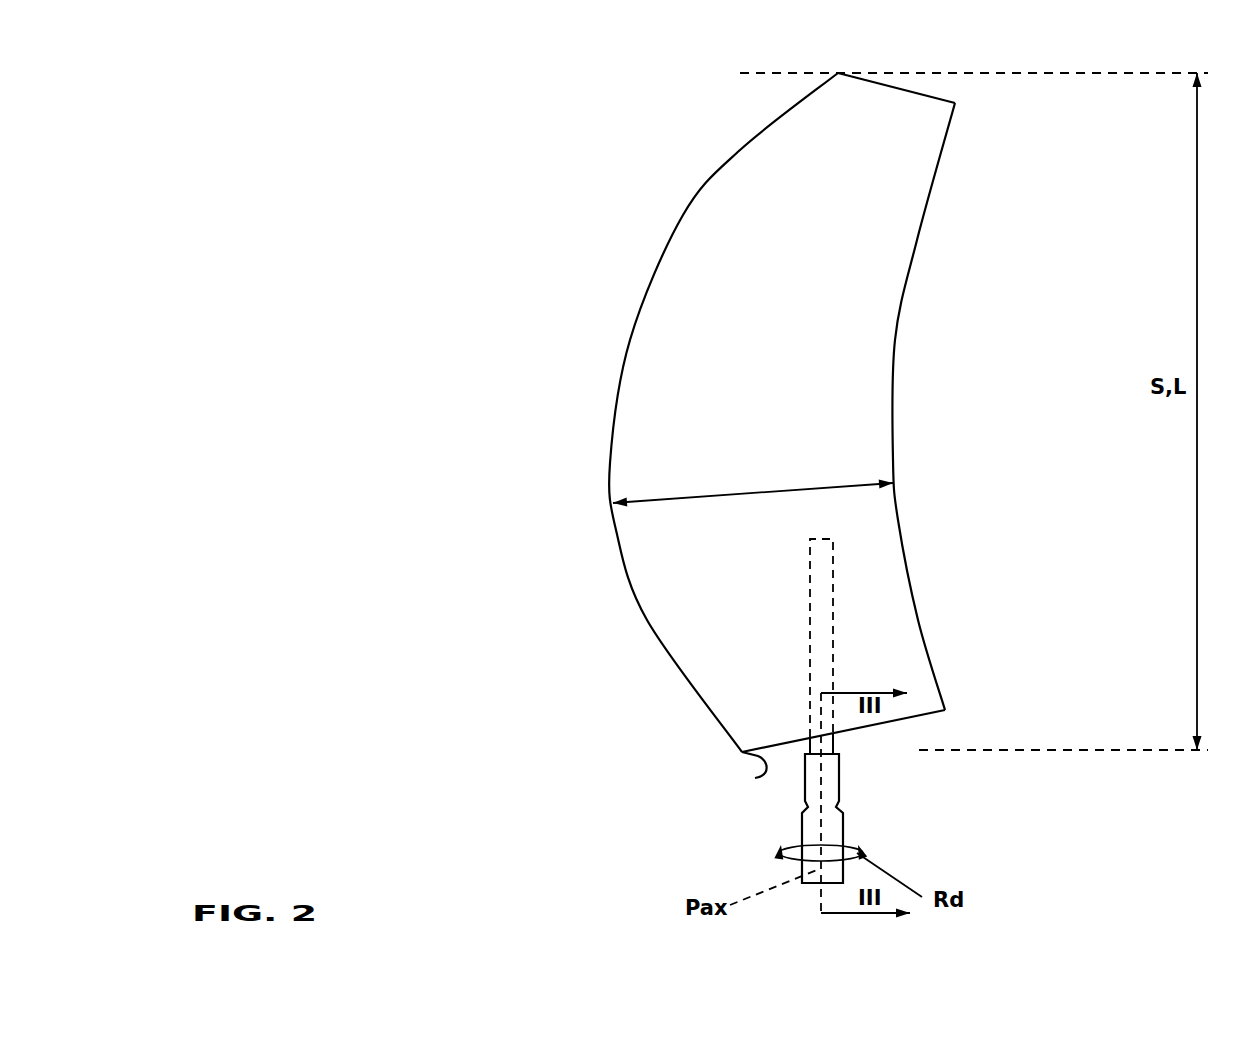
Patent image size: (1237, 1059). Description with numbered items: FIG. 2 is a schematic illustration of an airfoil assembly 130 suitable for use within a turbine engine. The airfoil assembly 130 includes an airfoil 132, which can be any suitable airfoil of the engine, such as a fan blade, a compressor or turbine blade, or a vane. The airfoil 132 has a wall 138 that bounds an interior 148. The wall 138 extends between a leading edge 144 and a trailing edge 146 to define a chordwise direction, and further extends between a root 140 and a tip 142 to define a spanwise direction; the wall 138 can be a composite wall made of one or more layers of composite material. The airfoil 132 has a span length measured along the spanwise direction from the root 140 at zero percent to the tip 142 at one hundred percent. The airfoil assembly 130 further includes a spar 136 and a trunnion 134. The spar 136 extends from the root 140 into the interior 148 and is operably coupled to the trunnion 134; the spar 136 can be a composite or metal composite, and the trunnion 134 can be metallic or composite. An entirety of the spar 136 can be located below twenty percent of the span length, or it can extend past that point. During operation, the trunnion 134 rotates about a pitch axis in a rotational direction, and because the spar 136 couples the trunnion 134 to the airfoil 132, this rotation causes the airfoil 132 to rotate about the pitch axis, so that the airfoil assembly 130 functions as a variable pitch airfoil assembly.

The airfoil assembly 130 is at (363, 152).
The airfoil 132 is at (622, 355).
The trunnion 134 is at (850, 788).
The spar 136 is at (835, 644).
The wall 138 is at (787, 173).
The root 140 is at (755, 778).
The tip 142 is at (922, 94).
The leading edge 144 is at (683, 215).
The trailing edge 146 is at (918, 237).
The interior 148 is at (868, 567).